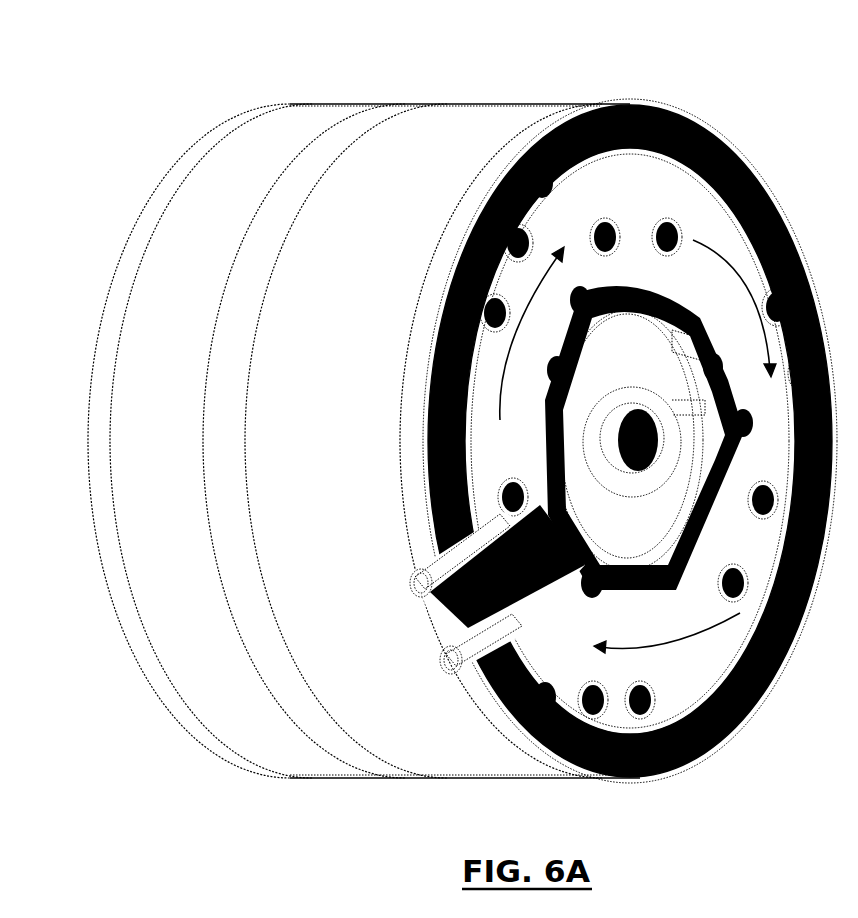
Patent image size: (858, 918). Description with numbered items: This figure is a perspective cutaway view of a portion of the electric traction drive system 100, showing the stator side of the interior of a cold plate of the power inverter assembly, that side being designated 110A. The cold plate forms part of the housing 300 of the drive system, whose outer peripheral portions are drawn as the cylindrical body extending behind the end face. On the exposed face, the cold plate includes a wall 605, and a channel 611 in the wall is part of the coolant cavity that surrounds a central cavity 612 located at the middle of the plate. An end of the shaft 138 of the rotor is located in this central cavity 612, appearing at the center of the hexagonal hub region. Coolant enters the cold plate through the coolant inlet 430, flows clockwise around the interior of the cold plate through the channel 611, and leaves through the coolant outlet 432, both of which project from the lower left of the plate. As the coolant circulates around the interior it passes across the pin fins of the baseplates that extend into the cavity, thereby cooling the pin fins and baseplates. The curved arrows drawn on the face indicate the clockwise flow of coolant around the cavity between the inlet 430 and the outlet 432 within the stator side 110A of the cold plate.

The electric traction drive system 100 is at (207, 66).
The housing 300 is at (156, 200).
The stator side of the cold plate interior 110A is at (580, 112).
The wall 605 is at (670, 182).
The channel 611 is at (750, 222).
The central cavity 612 is at (718, 466).
The shaft 138 is at (634, 410).
The coolant inlet 430 is at (413, 574).
The coolant outlet 432 is at (449, 676).